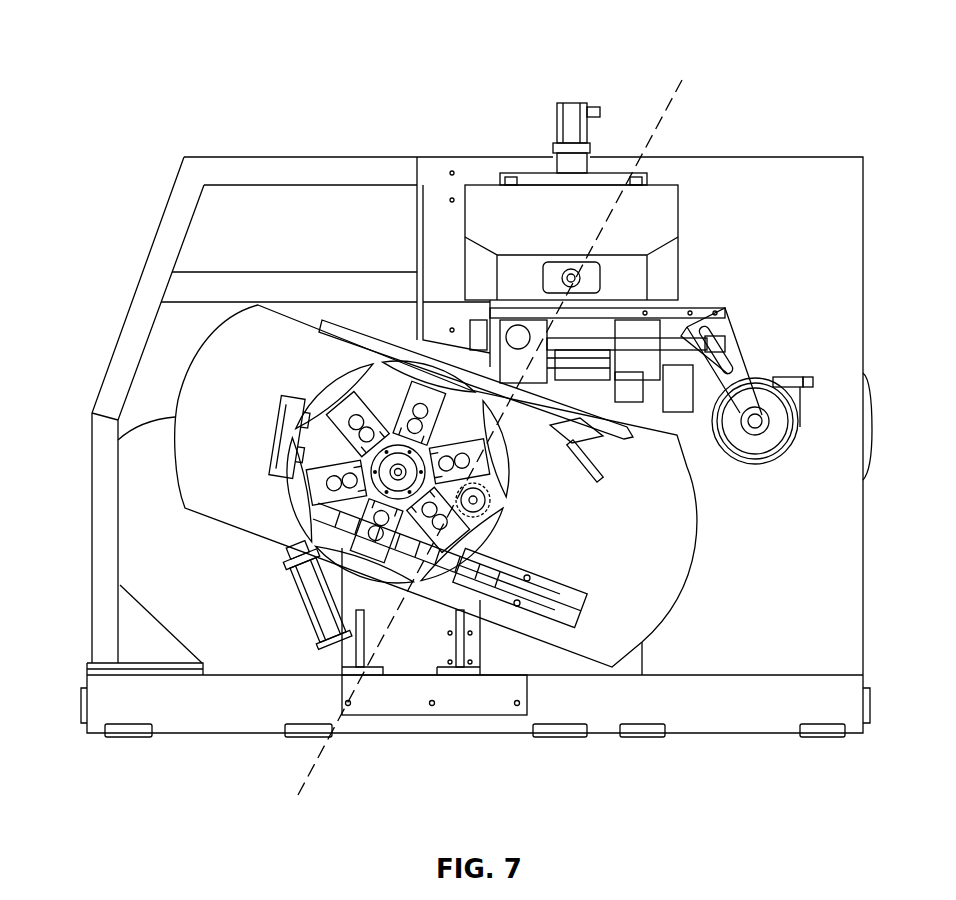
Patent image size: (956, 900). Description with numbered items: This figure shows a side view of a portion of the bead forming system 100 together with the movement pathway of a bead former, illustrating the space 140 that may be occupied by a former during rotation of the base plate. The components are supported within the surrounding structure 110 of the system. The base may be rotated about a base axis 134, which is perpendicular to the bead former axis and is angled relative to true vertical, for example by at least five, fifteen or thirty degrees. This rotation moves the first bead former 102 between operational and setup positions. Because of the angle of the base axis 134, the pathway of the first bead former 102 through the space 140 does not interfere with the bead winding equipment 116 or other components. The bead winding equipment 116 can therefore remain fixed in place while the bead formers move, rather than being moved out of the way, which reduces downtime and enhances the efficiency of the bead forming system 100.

The bead forming system 100 is at (146, 46).
The first bead former 102 is at (415, 358).
The frame 110 is at (822, 186).
The bead winding equipment 116 is at (743, 375).
The base axis 134 is at (303, 780).
The space 140 is at (162, 417).